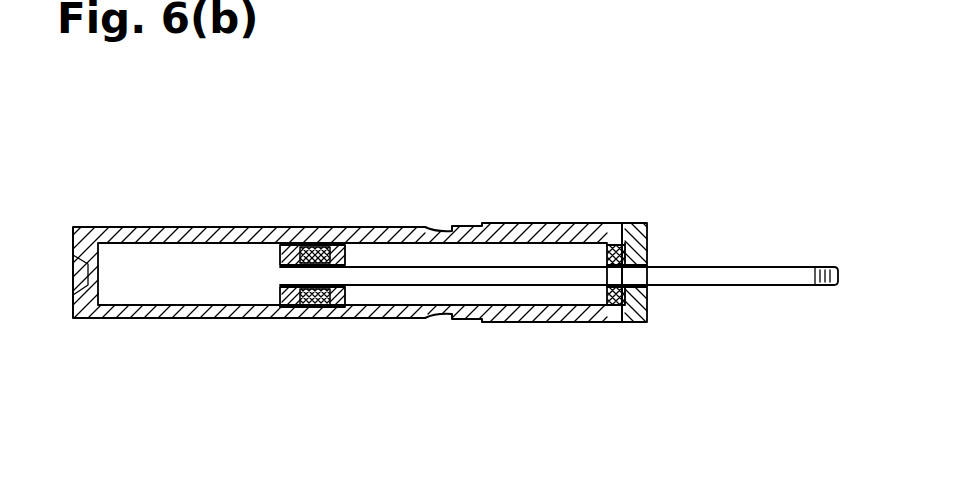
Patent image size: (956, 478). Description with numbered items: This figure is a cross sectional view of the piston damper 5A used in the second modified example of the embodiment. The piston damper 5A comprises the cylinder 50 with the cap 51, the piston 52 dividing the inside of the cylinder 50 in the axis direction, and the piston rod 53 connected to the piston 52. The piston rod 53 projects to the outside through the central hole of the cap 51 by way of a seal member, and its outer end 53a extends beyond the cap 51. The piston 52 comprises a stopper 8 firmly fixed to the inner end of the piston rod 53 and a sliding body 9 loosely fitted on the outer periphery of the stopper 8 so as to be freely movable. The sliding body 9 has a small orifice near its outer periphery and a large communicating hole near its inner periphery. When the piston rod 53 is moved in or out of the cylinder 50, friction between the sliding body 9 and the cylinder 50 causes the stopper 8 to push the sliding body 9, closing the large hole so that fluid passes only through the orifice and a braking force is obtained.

The piston damper 5A is at (272, 210).
The cylinder 50 is at (183, 227).
The cap 51 is at (641, 223).
The piston 52 is at (312, 378).
The piston rod 53 is at (742, 267).
The rod tip 53a is at (822, 267).
The sliding body 9 is at (320, 300).
The stopper 8 is at (342, 288).